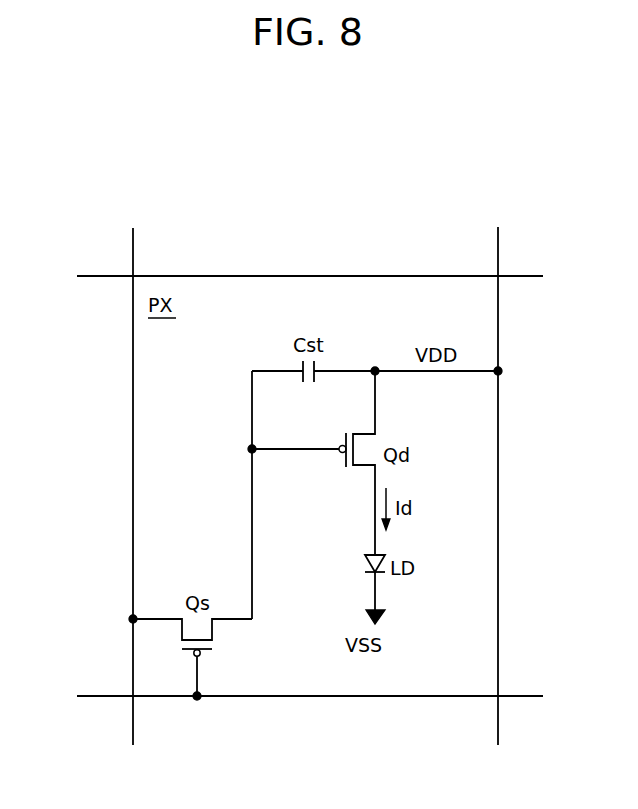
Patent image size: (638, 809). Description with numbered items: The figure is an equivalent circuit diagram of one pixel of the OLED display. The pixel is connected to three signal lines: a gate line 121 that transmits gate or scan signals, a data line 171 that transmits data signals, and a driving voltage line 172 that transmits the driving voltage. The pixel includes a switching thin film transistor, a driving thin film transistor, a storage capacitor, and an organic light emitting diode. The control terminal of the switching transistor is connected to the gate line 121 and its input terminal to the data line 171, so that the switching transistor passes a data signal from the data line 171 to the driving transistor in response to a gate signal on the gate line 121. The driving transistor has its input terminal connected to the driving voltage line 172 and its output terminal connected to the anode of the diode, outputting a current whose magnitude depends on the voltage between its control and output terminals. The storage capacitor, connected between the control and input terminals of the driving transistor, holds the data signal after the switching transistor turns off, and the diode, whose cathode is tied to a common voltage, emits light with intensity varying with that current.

The data line 171 is at (133, 473).
The driving voltage line 172 is at (498, 473).
The gate line 121 is at (288, 698).